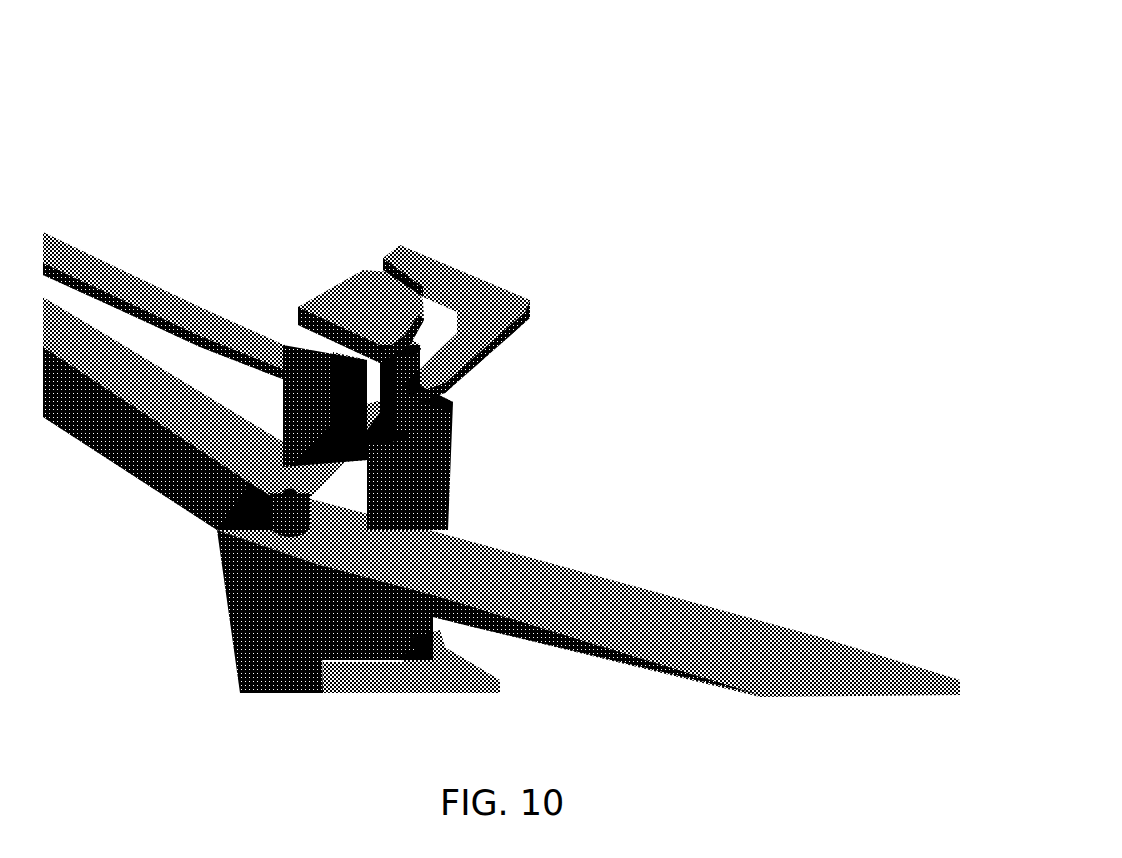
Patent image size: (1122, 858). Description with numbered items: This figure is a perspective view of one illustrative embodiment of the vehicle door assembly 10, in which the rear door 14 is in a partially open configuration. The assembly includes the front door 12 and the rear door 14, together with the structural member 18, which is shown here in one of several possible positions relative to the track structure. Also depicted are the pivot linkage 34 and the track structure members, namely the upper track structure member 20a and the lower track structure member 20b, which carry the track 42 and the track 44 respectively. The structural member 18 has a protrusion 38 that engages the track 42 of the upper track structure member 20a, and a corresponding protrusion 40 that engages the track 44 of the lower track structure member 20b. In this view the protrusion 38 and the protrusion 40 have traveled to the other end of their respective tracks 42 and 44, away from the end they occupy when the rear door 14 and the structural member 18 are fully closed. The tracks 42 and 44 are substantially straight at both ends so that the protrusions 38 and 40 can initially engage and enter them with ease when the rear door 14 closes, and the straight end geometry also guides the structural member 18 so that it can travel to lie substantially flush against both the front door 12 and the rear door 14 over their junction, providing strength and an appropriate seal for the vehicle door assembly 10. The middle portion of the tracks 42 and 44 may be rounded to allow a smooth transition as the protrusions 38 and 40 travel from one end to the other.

The vehicle door assembly 10 is at (359, 112).
The front door 12 is at (167, 258).
The rear door 14 is at (640, 590).
The structural member 18 is at (447, 472).
The upper track structure member 20a is at (500, 290).
The lower track structure member 20b is at (460, 643).
The pivot linkage 34 is at (301, 448).
The protrusion 38 is at (414, 355).
The protrusion 40 is at (412, 671).
The track 42 is at (370, 258).
The track 44 is at (425, 653).